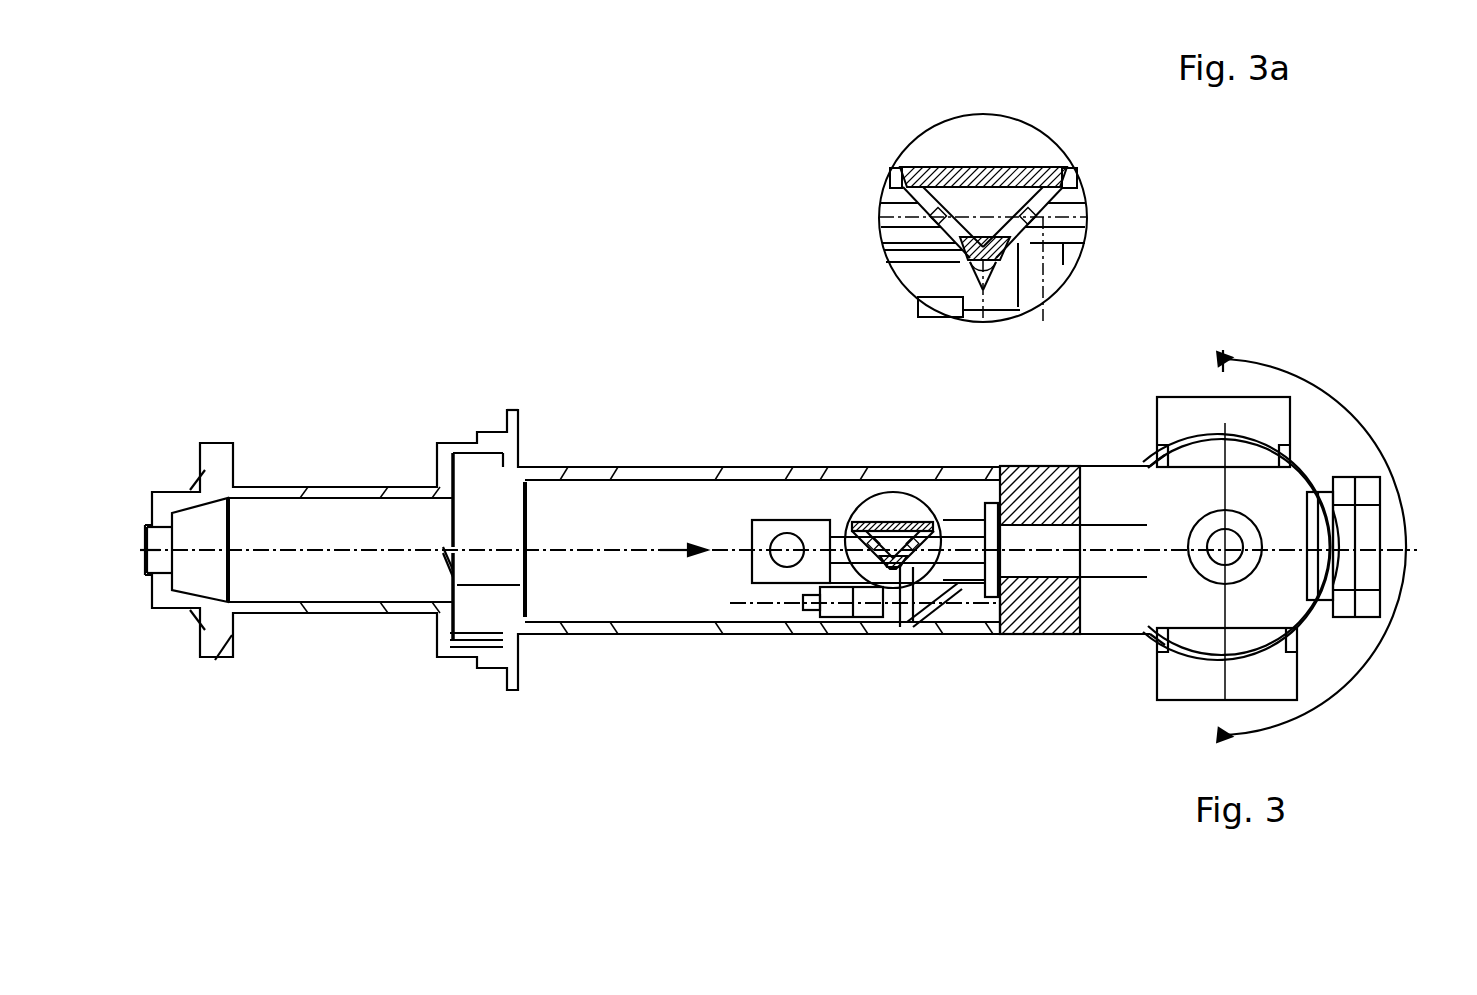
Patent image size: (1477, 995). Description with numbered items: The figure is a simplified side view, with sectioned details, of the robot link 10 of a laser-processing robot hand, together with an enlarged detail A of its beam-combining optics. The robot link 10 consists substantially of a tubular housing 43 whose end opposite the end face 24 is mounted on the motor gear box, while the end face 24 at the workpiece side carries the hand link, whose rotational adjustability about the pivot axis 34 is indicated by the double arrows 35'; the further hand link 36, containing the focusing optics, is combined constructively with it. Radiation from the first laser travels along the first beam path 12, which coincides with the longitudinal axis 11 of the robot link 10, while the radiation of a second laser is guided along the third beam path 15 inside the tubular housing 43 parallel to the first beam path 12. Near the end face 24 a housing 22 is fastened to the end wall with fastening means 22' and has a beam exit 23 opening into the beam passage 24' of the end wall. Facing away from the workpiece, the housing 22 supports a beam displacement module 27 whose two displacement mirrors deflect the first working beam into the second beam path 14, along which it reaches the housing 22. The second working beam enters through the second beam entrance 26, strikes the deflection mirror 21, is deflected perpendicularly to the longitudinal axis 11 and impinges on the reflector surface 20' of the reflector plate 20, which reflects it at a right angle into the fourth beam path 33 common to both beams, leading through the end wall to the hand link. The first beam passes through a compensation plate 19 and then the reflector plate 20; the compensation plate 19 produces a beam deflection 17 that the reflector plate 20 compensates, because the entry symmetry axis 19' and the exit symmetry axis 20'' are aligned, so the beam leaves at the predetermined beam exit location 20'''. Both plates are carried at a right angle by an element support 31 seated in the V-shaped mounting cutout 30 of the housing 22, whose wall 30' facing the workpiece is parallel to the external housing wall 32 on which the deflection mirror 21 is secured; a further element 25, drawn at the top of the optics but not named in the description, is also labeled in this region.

In FIG. 3, the robot link 10 is at (562, 660).
In FIG. 3, the longitudinal axis 11 is at (608, 552).
In FIG. 3, the first beam path 12 is at (658, 552).
In FIG. 3, the second beam path 14 is at (816, 522).
In FIG. 3, the third beam path 15 is at (777, 603).
In FIG. 3A, the beam deflection 17 is at (967, 210).
In FIG. 3A, the compensation plate 19 is at (918, 173).
In FIG. 3A, the entry symmetry axis 19' is at (873, 244).
In FIG. 3A, the reflector plate 20 is at (1034, 168).
In FIG. 3A, the reflector surface 20' is at (1064, 273).
In FIG. 3A, the exit symmetry axis 20'' is at (1112, 220).
In FIG. 3A, the beam exit location 20''' is at (1126, 253).
In FIG. 3, the deflection mirror 21 is at (947, 633).
In FIG. 3, the housing 22 is at (982, 615).
In FIG. 3, the fastening means 22' is at (1050, 665).
In FIG. 3, the beam exit 23 is at (1053, 468).
In FIG. 3, the end face 24 is at (1203, 548).
In FIG. 3, the beam passage 24' is at (1110, 559).
In FIG. 3, the bearing race 25 is at (850, 521).
In FIG. 3, the second beam entrance 26 is at (865, 633).
In FIG. 3, the beam displacement module 27 is at (755, 532).
In FIG. 3A, the mounting cutout 30 is at (847, 169).
In FIG. 3A, the wall of the mounting cutout 30' is at (1118, 161).
In FIG. 3A, the element support 31 is at (990, 180).
In FIG. 3, the external housing wall 32 is at (908, 633).
In FIG. 3, the fourth beam path 33 is at (977, 518).
In FIG. 3, the pivot axis 34 is at (1210, 537).
In FIG. 3, the double arrows 35' is at (1333, 546).
In FIG. 3, the hand link 36 is at (1372, 613).
In FIG. 3, the tubular housing 43 is at (583, 470).
In FIG. 3, the detail illustration A is at (924, 490).